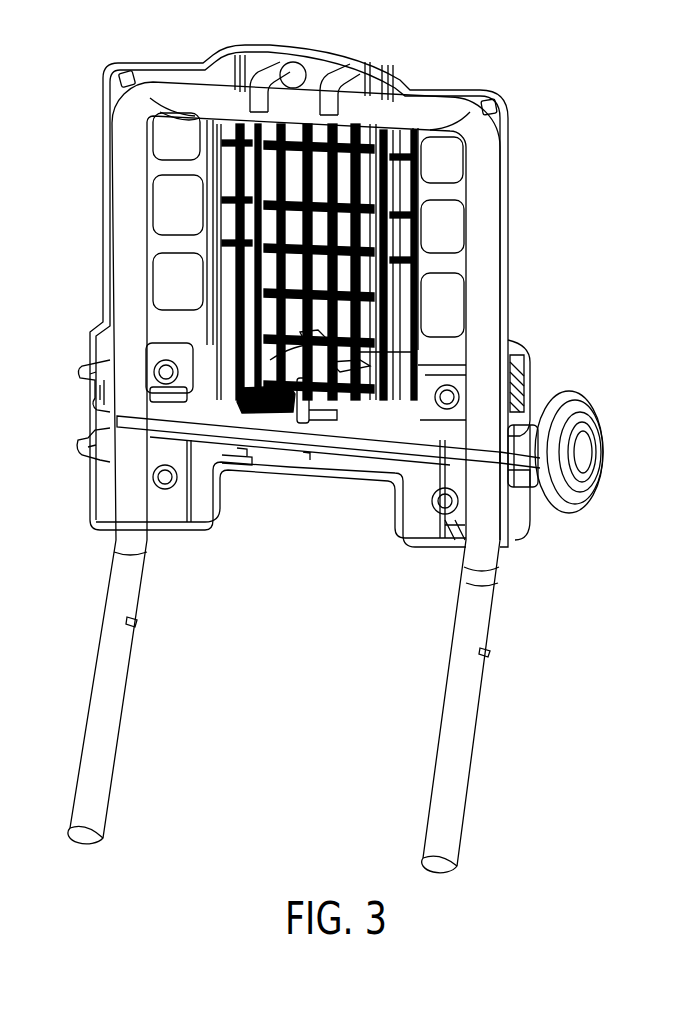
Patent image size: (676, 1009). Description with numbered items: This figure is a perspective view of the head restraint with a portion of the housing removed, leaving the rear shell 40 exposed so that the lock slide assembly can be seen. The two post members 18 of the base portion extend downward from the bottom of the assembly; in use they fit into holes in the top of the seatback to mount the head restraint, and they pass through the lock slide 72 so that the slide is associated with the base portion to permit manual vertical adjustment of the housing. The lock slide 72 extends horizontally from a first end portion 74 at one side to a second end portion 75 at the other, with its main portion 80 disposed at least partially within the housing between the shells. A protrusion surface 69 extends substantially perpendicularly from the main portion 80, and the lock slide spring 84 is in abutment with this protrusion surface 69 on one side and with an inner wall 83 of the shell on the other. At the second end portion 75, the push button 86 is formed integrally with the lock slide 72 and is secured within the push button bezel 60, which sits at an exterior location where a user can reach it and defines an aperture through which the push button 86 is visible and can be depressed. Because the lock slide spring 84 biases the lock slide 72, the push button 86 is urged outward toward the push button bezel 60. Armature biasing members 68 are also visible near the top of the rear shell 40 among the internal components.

The post members 18 is at (110, 737).
The rear shell 40 is at (482, 92).
The push button bezel 60 is at (583, 410).
The armature biasing members 68 is at (204, 66).
The protrusion surface 69 is at (305, 402).
The lock slide 72 is at (246, 460).
The first end portion 74 is at (97, 420).
The second end portion 75 is at (517, 512).
The main portion 80 is at (340, 468).
The inner wall 83 is at (238, 392).
The lock slide spring 84 is at (333, 368).
The push button 86 is at (585, 455).